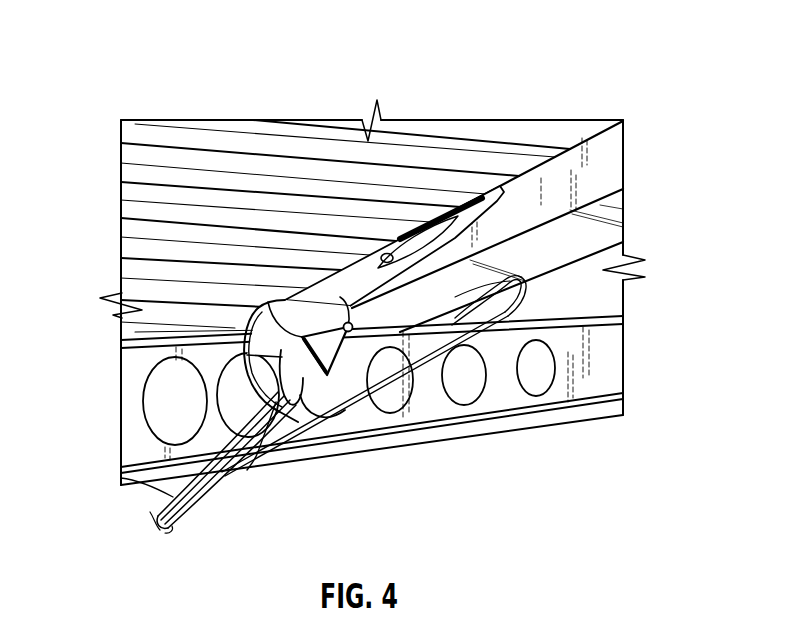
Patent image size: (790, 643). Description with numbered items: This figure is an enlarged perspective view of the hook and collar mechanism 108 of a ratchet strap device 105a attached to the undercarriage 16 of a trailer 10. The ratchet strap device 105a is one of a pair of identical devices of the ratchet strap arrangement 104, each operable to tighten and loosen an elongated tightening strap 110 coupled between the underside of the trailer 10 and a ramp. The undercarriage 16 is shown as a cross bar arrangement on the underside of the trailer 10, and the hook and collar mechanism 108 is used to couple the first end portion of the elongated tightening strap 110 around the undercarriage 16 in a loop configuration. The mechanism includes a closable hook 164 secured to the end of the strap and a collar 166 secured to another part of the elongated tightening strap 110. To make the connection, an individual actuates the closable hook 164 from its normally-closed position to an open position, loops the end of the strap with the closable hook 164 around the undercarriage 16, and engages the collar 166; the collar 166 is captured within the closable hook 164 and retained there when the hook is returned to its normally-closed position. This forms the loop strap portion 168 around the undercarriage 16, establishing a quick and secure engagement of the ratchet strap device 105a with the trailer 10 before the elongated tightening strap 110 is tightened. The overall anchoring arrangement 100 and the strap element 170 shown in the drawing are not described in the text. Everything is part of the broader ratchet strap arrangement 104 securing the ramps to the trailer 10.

The trailer 10 is at (388, 167).
The undercarriage 16 is at (532, 212).
The anchoring system 100 is at (321, 383).
The ratchet strap arrangement 104 is at (215, 500).
The ratchet strap device 105a is at (247, 468).
The hook and collar mechanism 108 is at (425, 378).
The elongated tightening strap 110 is at (173, 497).
The closable hook 164 is at (246, 336).
The collar 166 is at (258, 452).
The loop strap portion 168 is at (523, 305).
The tie strap 170 is at (384, 395).